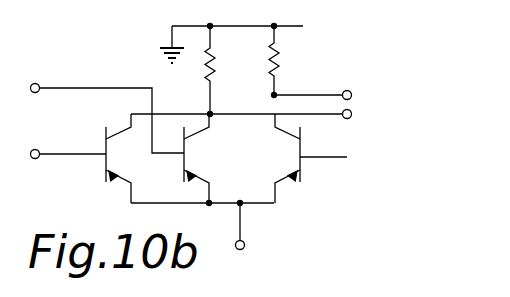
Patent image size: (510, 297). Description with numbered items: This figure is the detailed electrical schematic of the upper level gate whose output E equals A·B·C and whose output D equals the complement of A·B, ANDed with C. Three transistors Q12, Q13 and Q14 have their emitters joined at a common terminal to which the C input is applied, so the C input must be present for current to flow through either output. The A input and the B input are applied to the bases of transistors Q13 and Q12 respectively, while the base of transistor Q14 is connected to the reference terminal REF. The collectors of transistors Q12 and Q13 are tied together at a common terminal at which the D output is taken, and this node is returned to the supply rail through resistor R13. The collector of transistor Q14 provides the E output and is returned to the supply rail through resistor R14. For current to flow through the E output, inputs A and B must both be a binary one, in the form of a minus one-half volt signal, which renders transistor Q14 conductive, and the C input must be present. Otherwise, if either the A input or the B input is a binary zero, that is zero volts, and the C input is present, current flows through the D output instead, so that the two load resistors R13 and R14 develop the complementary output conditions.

The transistor Q12 is at (124, 158).
The transistor Q13 is at (203, 158).
The transistor Q14 is at (281, 158).
The resistor R13 is at (227, 70).
The resistor R14 is at (291, 60).
The A input A is at (98, 116).
The B input B is at (59, 155).
The C input C is at (202, 228).
The D output D is at (249, 115).
The E output E is at (319, 96).
The reference input REF is at (340, 158).